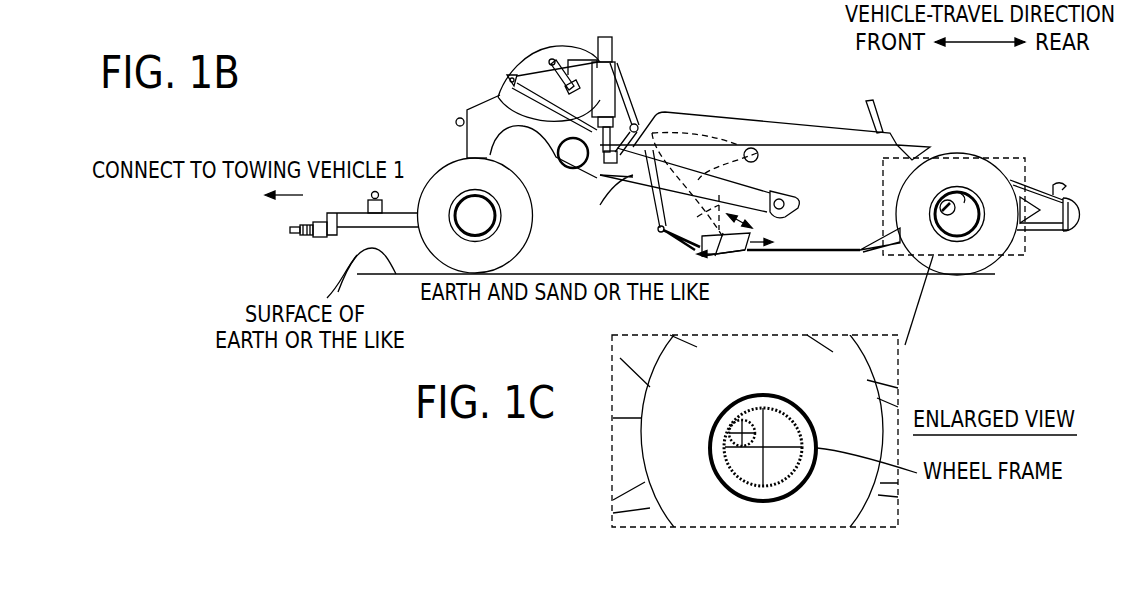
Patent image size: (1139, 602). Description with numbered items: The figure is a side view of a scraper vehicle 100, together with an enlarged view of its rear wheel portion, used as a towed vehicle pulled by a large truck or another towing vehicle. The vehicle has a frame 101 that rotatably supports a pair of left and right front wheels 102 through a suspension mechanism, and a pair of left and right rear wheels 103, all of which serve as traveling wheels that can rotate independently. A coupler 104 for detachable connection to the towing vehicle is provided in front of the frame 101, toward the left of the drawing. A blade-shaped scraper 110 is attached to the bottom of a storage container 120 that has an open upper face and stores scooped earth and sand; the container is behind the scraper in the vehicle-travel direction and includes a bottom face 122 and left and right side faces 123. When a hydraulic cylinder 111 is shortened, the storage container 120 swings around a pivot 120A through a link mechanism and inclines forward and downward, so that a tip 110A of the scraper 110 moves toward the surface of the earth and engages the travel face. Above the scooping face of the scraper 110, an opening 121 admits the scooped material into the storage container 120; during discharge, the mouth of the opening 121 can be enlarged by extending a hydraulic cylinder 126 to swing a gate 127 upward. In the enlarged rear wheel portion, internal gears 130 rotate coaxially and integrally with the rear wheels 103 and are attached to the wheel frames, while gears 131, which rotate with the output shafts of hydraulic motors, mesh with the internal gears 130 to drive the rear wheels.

In FIG. 1B, the scraper vehicle 100 is at (352, 72).
In FIG. 1B, the frame 101 is at (508, 117).
In FIG. 1B, the front wheels 102 is at (426, 164).
In FIG. 1B, the rear wheels 103 is at (999, 269).
In FIG. 1C, the rear wheels 103 is at (857, 501).
In FIG. 1B, the coupler 104 is at (290, 247).
In FIG. 1B, the scraper 110 is at (730, 269).
In FIG. 1B, the tip of the scraper 110A is at (717, 262).
In FIG. 1B, the hydraulic cylinder 111 is at (620, 93).
In FIG. 1B, the storage container 120 is at (831, 231).
In FIG. 1B, the pivot 120A is at (778, 200).
In FIG. 1B, the opening 121 is at (700, 252).
In FIG. 1B, the bottom face 122 is at (817, 233).
In FIG. 1B, the side faces 123 is at (808, 175).
In FIG. 1B, the hydraulic cylinder 126 is at (507, 100).
In FIG. 1B, the gate 127 is at (670, 152).
In FIG. 1B, the internal gears 130 is at (963, 198).
In FIG. 1C, the internal gears 130 is at (777, 420).
In FIG. 1B, the gears 131 is at (948, 216).
In FIG. 1C, the gears 131 is at (729, 440).